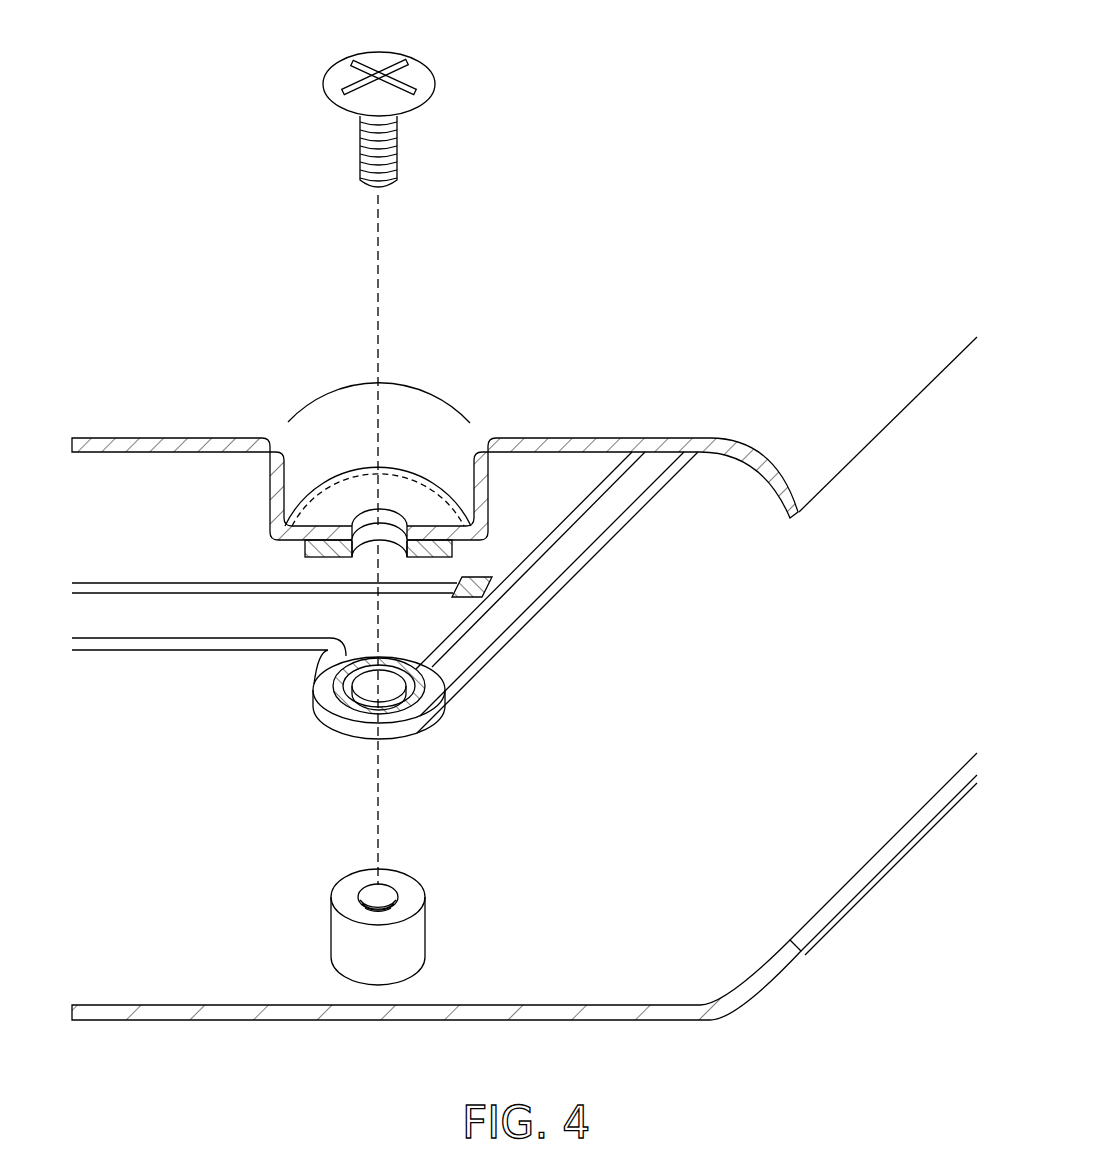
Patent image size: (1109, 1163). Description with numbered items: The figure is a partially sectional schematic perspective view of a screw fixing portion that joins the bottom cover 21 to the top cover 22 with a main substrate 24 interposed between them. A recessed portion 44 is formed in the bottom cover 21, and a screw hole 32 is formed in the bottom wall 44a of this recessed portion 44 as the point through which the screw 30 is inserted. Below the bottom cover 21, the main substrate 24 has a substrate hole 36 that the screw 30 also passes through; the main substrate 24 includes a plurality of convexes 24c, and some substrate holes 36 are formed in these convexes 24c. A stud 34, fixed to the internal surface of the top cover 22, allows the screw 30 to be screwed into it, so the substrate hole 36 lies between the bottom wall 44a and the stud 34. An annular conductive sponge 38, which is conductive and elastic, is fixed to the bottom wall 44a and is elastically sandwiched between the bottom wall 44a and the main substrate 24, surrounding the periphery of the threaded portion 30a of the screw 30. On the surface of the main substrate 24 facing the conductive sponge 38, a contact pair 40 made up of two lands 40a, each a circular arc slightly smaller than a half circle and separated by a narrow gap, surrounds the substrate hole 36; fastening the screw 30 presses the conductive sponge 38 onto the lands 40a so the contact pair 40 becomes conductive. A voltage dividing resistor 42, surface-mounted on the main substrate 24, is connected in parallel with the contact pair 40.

The bottom cover 21 is at (855, 418).
The top cover 22 is at (855, 835).
The main substrate 24 is at (178, 628).
The convex 24c is at (318, 686).
The screw 30 is at (452, 59).
The threaded portion 30a is at (360, 145).
The screw hole 32 is at (370, 508).
The stud 34 is at (345, 936).
The substrate hole 36 is at (350, 714).
The conductive sponge 38 is at (455, 549).
The contact pair 40 is at (536, 721).
The land 40a is at (428, 690).
The voltage dividing resistor 42 is at (482, 597).
The recessed portion 44 is at (433, 422).
The bottom wall 44a is at (342, 498).